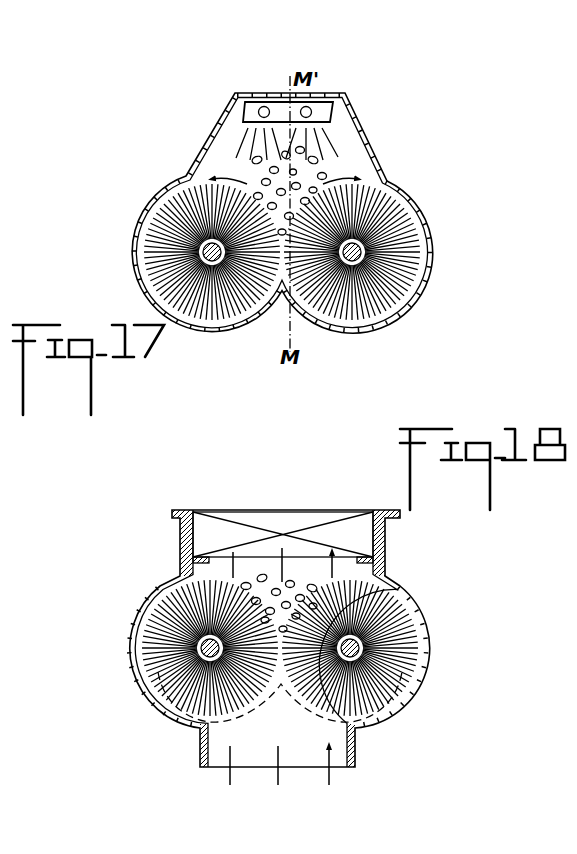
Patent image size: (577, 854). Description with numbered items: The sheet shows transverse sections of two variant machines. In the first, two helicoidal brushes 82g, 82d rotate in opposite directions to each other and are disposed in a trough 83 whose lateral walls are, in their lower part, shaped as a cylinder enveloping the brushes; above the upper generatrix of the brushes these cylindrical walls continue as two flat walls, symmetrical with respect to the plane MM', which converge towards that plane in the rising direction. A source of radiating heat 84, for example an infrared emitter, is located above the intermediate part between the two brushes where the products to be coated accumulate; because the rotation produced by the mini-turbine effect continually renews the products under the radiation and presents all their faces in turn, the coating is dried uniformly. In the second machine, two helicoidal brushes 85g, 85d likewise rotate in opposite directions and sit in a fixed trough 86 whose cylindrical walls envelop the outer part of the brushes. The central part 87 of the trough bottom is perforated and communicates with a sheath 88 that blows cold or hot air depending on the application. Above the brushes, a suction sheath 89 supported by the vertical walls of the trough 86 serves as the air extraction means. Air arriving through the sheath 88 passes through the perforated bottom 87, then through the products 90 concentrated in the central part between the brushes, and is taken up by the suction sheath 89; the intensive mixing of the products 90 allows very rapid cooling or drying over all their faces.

In FIG. 17, the helicoidal brush 82g is at (146, 257).
In FIG. 17, the helicoidal brush 82d is at (402, 242).
In FIG. 17, the trough 83 is at (421, 293).
In FIG. 17, the source of radiating heat 84 is at (325, 114).
In FIG. 18, the helicoidal brush 85g is at (170, 584).
In FIG. 18, the helicoidal brush 85d is at (410, 640).
In FIG. 18, the fixed trough 86 is at (430, 672).
In FIG. 18, the perforated central part of the trough bottom 87 is at (308, 712).
In FIG. 18, the sheath 88 is at (200, 745).
In FIG. 18, the suction sheath 89 is at (226, 527).
In FIG. 18, the products 90 is at (284, 592).